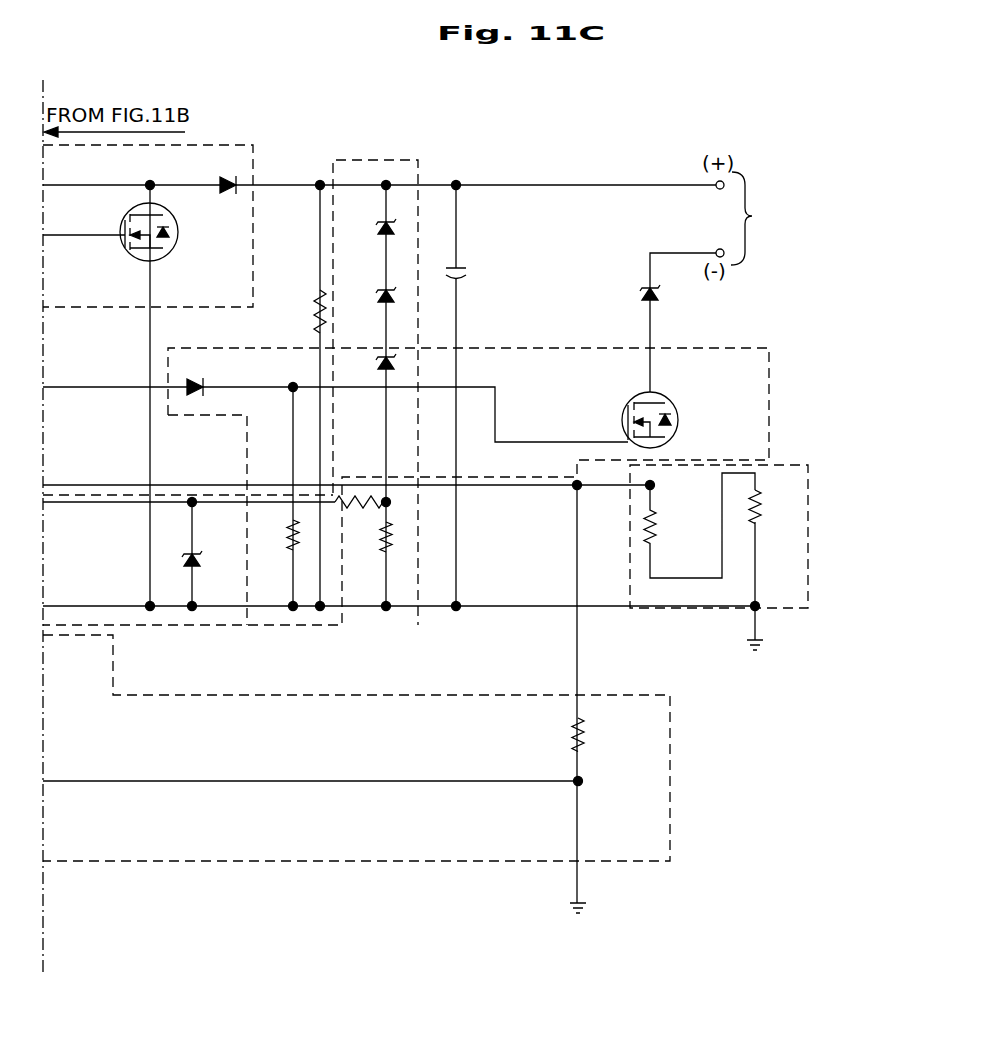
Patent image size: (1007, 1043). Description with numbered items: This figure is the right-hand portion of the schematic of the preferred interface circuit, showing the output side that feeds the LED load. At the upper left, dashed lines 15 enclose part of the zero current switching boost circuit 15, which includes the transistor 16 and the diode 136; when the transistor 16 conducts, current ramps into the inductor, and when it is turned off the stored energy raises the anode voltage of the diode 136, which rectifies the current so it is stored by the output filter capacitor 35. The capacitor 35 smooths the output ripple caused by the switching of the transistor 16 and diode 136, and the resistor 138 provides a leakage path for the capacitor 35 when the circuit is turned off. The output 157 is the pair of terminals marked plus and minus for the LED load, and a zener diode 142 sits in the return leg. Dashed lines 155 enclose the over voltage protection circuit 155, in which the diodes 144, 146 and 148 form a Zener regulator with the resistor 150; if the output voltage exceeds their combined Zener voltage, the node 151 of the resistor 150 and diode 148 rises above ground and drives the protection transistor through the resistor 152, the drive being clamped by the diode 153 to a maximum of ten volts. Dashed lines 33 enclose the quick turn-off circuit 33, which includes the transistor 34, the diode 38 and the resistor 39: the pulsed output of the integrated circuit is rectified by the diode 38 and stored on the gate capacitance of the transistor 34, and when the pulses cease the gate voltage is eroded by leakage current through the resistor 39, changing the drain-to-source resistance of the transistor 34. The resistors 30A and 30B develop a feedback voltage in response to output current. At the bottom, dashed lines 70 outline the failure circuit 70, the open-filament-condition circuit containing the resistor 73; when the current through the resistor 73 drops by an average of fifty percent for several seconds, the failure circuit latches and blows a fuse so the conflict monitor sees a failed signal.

The zero current switching boost circuit 15 is at (252, 145).
The diode 136 is at (220, 185).
The transistor 16 is at (178, 246).
The resistor 138 is at (316, 311).
The over voltage protection circuit 155 is at (358, 160).
The diode 144 is at (382, 230).
The diode 146 is at (382, 298).
The diode 148 is at (382, 364).
The output filter capacitor 35 is at (458, 277).
The output 157 is at (745, 194).
The zener diode 142 is at (658, 291).
The quick turn-off circuit 33 is at (777, 403).
The diode 38 is at (208, 387).
The transistor 34 is at (661, 396).
The diode 153 is at (186, 558).
The resistor 39 is at (291, 541).
The resistor 152 is at (360, 514).
The resistor 150 is at (385, 533).
The node 151 is at (388, 503).
The resistor 30A is at (647, 528).
The resistor 30B is at (750, 507).
The resistor 73 is at (586, 729).
The failure circuit 70 is at (317, 863).